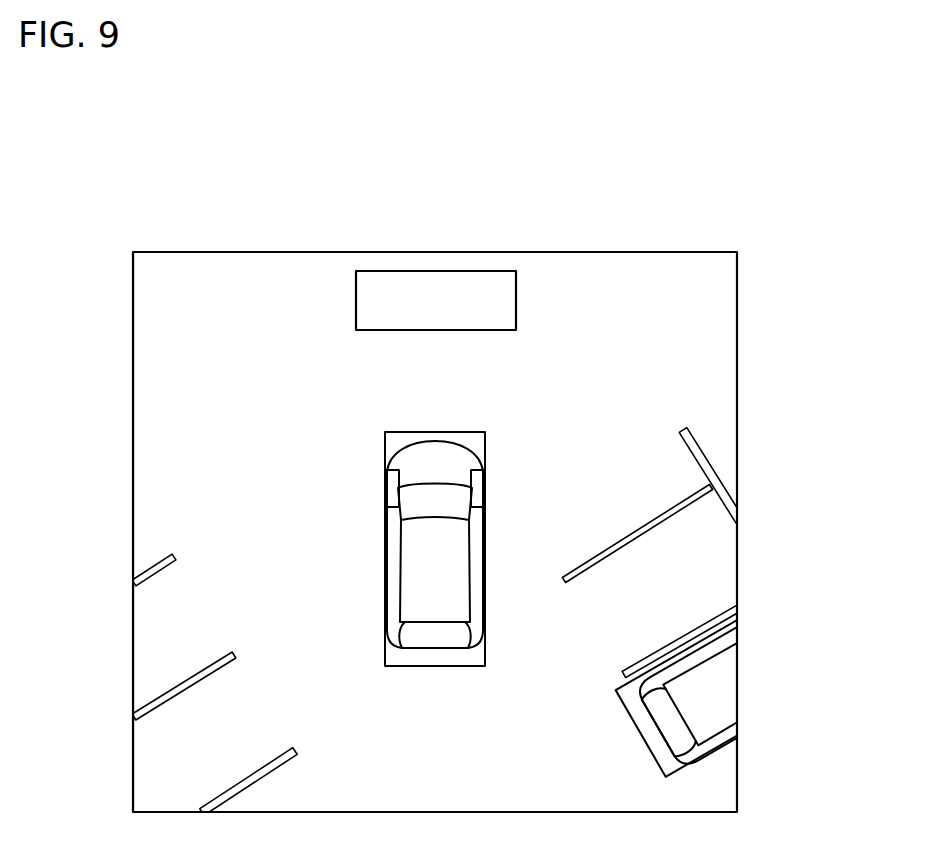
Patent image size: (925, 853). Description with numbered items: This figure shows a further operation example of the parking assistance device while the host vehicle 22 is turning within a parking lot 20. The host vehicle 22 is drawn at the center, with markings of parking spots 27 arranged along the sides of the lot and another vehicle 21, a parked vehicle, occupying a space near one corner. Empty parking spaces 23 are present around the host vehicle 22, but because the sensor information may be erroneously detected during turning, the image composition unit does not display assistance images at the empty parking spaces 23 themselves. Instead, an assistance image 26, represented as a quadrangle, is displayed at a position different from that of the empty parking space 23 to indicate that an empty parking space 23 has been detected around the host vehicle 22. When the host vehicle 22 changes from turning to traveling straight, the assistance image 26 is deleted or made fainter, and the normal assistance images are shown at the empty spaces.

The parking lot 20 is at (760, 322).
The another vehicle 21 is at (720, 677).
The host vehicle 22 is at (433, 649).
The empty parking space 23 is at (148, 652).
The assistance image 26 is at (516, 302).
The parking spot marking 27 is at (162, 555).